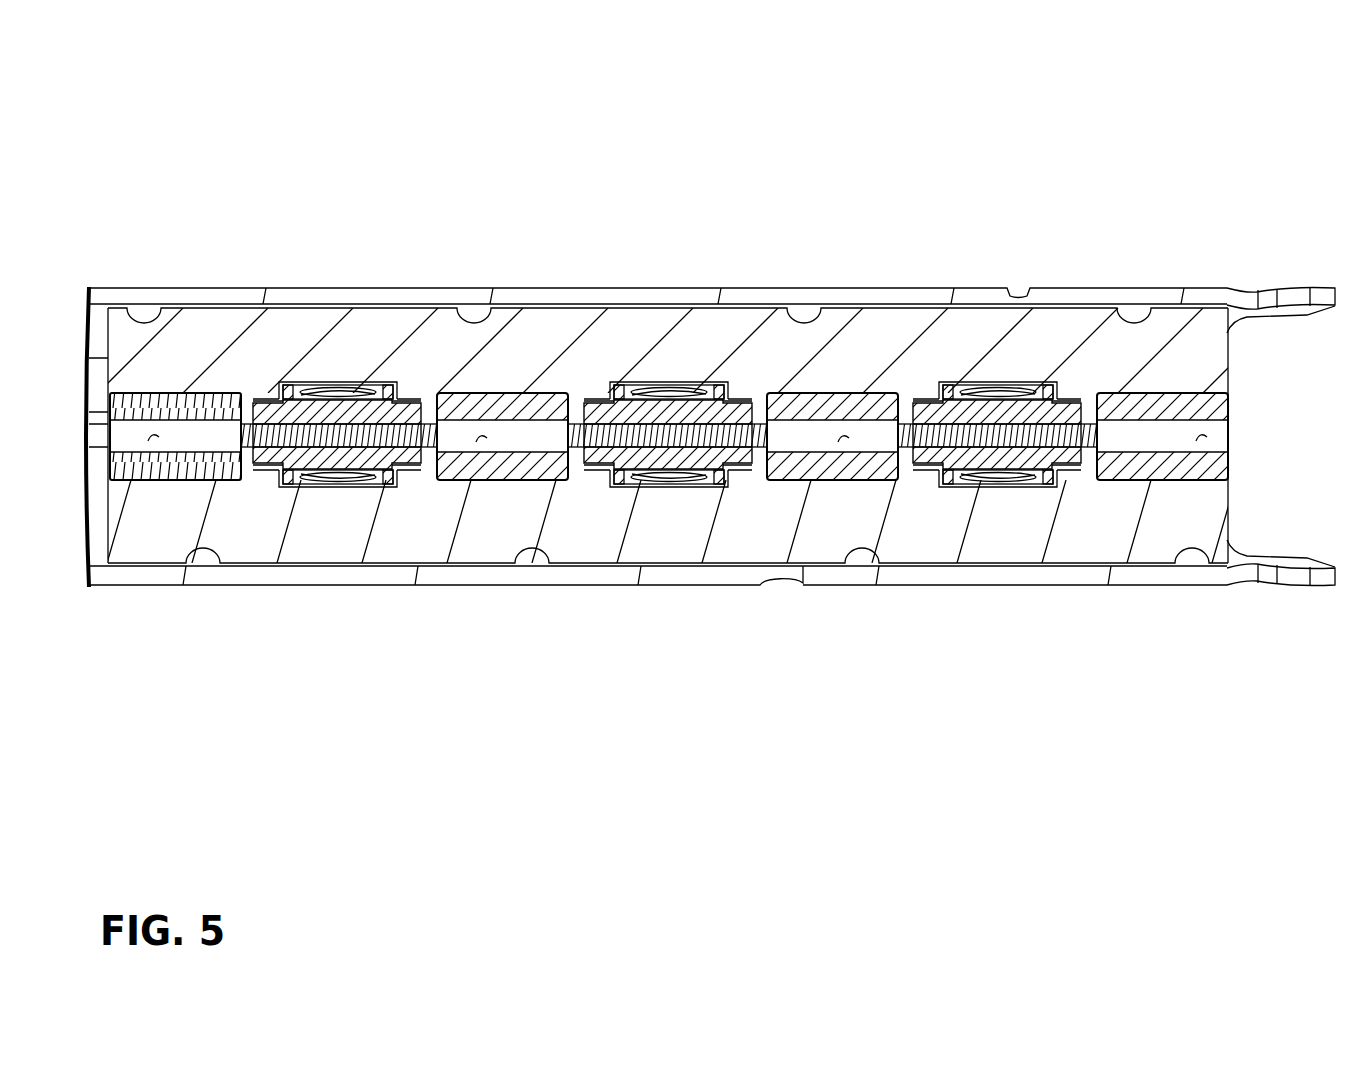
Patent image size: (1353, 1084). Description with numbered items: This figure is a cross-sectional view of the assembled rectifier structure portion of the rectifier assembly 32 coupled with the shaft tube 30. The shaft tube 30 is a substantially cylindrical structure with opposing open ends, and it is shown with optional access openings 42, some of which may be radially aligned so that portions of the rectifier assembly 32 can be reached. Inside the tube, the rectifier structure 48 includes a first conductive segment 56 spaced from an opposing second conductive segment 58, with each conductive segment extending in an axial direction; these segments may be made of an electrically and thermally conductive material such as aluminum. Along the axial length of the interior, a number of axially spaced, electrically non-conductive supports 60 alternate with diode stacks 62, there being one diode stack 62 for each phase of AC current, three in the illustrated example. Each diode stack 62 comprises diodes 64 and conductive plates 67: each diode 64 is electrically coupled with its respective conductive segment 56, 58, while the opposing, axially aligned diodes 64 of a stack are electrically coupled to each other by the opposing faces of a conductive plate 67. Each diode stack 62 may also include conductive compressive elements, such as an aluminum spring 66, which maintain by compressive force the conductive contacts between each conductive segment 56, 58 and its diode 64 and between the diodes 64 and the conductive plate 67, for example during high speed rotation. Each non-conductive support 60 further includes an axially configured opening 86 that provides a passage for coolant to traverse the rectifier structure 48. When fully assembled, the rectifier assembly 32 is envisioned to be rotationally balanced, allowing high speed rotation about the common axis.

The shaft tube 30 is at (553, 296).
The rectifier assembly 32 is at (450, 98).
The access openings 42 is at (1122, 287).
The rectifier structure 48 is at (376, 250).
The first conductive segment 56 is at (760, 335).
The second conductive segment 58 is at (690, 556).
The non-conductive support 60 is at (181, 470).
The diode stack 62 is at (376, 503).
The diode 64 is at (294, 425).
The spring 66 is at (318, 392).
The conductive plate 67 is at (250, 428).
The opening 86 is at (152, 440).